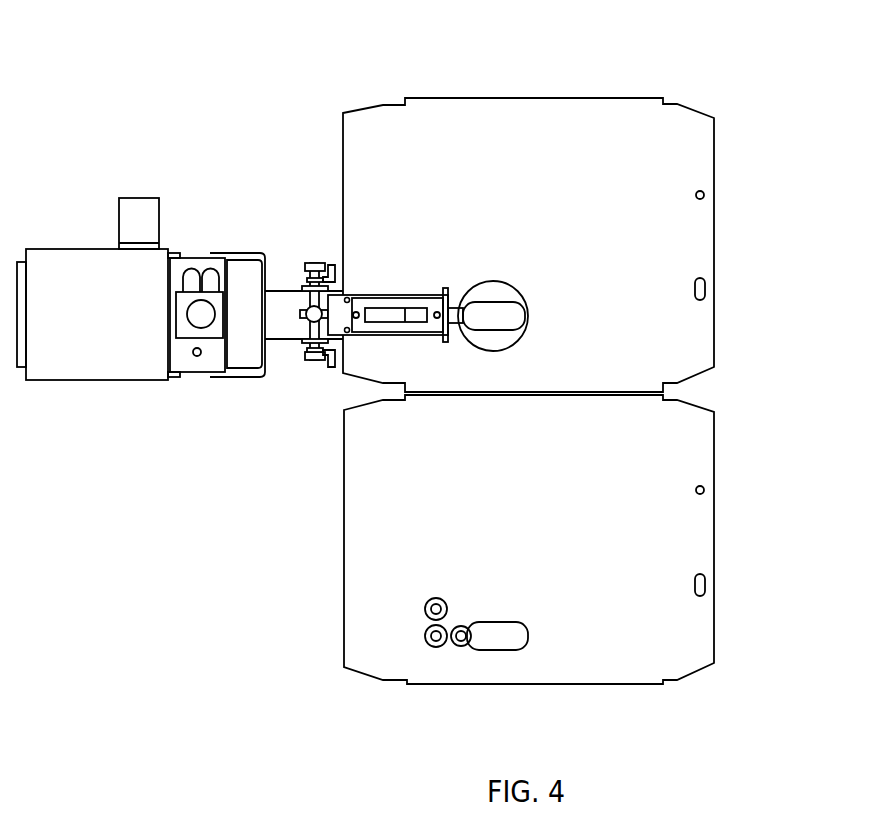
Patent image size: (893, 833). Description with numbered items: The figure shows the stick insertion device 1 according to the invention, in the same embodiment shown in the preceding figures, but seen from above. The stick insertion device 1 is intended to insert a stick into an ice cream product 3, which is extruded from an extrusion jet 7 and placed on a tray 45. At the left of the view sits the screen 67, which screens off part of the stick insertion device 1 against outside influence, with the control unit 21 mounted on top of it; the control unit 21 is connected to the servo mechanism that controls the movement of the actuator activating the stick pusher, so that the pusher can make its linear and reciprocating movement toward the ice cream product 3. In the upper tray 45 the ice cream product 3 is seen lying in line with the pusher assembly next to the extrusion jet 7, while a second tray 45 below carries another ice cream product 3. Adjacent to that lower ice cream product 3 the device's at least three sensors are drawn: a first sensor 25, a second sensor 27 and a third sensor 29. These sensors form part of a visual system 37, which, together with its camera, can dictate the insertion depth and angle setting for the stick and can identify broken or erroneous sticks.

The stick insertion device 1 is at (253, 152).
The ice cream product 3 is at (509, 331).
The extrusion jet 7 is at (514, 281).
The control unit 21 is at (168, 191).
The first sensor 25 is at (466, 602).
The second sensor 27 is at (424, 647).
The third sensor 29 is at (437, 581).
The visual system 37 is at (423, 610).
The tray 45 is at (572, 96).
The screen 67 is at (72, 246).